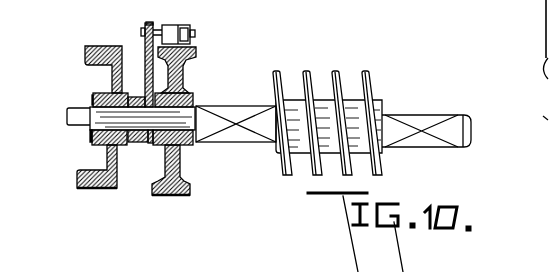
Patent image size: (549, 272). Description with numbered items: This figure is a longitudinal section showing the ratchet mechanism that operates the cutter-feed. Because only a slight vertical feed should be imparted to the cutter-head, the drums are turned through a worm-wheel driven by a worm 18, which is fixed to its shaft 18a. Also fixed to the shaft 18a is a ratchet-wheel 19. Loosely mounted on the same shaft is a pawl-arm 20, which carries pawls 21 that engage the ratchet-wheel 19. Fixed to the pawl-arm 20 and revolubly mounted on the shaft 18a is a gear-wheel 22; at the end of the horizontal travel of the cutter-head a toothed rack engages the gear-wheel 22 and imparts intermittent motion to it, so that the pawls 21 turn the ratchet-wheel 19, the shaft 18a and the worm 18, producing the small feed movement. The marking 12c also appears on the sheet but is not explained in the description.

The worm screw 18 is at (285, 176).
The worm shaft 18a is at (416, 113).
The gear wheel 19 is at (190, 186).
The plate 20 is at (146, 47).
The bolt 21 is at (195, 31).
The gear wheel 22 is at (85, 55).
The partial reference 12c is at (303, 0).